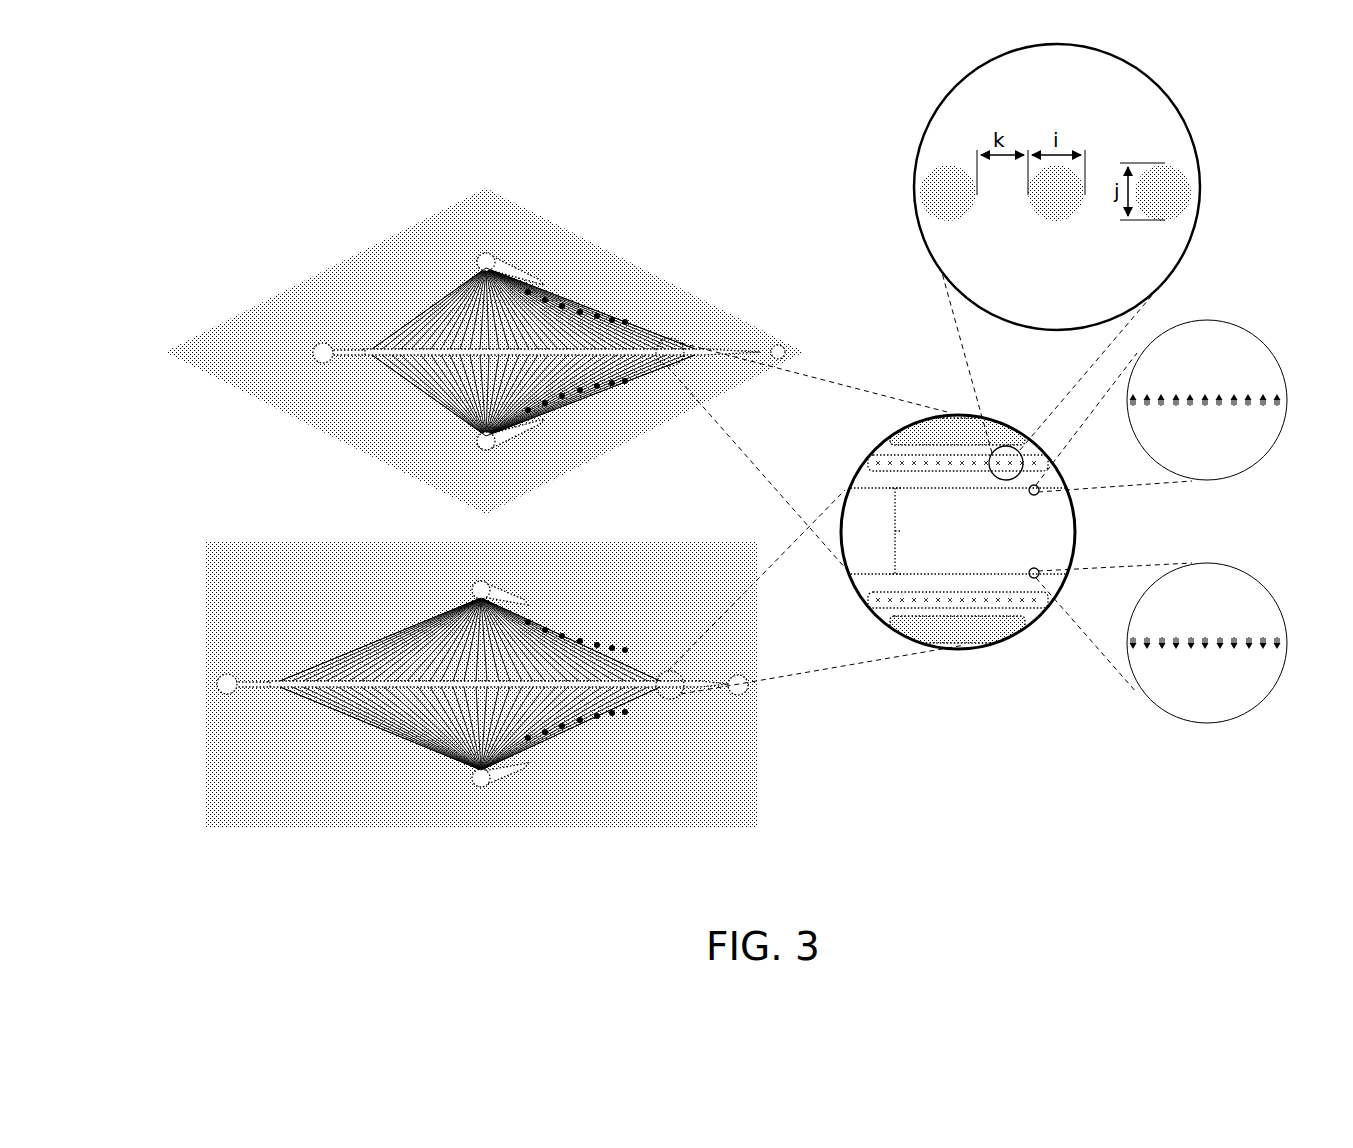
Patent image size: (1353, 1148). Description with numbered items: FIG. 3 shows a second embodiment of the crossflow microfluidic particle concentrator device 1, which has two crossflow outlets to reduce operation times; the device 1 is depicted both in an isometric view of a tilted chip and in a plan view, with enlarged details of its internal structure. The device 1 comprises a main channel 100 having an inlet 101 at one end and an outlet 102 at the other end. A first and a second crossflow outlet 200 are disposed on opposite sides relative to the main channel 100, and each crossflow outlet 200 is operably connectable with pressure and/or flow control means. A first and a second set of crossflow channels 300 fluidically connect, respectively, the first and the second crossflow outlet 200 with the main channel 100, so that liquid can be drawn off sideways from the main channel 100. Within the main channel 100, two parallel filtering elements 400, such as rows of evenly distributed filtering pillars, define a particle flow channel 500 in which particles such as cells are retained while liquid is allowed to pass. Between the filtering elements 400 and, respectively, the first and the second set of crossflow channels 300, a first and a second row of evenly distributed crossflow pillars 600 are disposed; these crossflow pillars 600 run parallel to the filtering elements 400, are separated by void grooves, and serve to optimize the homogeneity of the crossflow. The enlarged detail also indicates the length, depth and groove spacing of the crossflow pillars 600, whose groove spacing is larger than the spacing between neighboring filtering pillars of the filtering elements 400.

The crossflow microfluidic particle concentrator device 1 is at (373, 226).
The main channel 100 is at (496, 534).
The inlet 101 is at (318, 348).
The outlet 102 is at (782, 350).
The crossflow outlet 200 is at (490, 258).
The crossflow channels 300 is at (625, 322).
The filtering element 400 is at (1136, 418).
The particle flow channel 500 is at (922, 531).
The crossflow pillars 600 is at (958, 472).